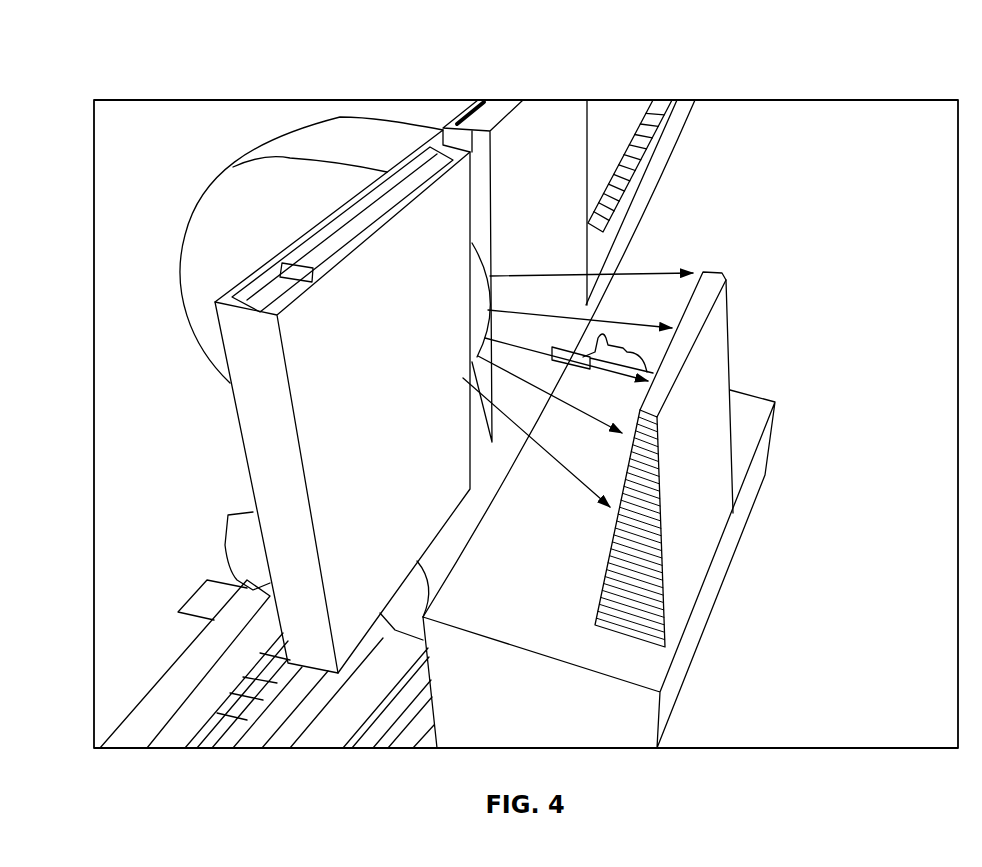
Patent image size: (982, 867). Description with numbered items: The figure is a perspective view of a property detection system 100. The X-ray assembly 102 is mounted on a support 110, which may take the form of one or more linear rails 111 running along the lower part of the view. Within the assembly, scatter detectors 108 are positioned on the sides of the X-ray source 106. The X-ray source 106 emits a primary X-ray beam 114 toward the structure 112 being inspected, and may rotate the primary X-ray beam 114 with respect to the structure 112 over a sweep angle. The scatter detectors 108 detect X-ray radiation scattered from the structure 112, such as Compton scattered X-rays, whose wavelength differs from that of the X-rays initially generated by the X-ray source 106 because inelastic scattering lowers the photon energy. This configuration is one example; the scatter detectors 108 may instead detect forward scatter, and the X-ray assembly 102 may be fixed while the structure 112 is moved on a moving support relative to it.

The property detection system 100 is at (190, 64).
The X-ray assembly 102 is at (387, 80).
The X-ray source 106 is at (417, 130).
The scatter detectors 108 is at (513, 102).
The support 110 is at (180, 750).
The linear rails 111 is at (147, 745).
The structure 112 is at (727, 278).
The primary X-ray beam 114 is at (497, 275).